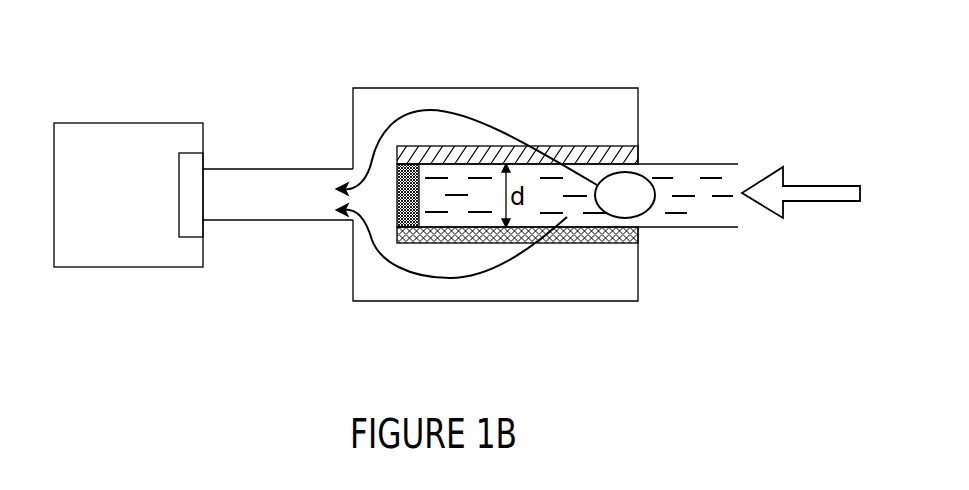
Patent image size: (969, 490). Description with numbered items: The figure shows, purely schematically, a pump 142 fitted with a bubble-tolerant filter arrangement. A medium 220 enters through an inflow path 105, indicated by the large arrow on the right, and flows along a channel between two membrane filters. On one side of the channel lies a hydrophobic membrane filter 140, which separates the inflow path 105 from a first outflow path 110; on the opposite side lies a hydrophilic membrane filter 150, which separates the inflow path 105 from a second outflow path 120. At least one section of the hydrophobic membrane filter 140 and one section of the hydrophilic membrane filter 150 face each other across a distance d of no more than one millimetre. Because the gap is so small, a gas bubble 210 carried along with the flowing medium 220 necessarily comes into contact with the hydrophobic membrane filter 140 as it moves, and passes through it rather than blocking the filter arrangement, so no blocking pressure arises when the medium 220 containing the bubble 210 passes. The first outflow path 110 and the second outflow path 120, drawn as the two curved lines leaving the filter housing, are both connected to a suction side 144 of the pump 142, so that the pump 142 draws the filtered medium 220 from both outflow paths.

The inflow path 105 is at (820, 186).
The first outflow path 110 is at (432, 110).
The second outflow path 120 is at (448, 278).
The hydrophobic membrane filter 140 is at (632, 147).
The pump 142 is at (132, 123).
The suction side 144 is at (207, 158).
The hydrophilic membrane filter 150 is at (623, 243).
The gas bubble 210 is at (605, 172).
The medium 220 is at (700, 203).